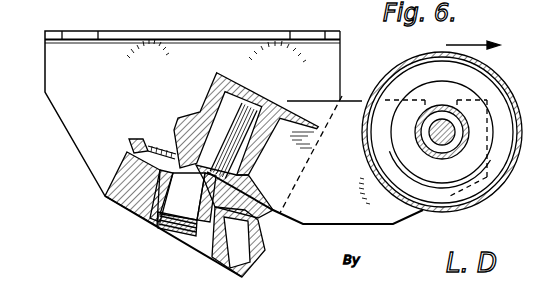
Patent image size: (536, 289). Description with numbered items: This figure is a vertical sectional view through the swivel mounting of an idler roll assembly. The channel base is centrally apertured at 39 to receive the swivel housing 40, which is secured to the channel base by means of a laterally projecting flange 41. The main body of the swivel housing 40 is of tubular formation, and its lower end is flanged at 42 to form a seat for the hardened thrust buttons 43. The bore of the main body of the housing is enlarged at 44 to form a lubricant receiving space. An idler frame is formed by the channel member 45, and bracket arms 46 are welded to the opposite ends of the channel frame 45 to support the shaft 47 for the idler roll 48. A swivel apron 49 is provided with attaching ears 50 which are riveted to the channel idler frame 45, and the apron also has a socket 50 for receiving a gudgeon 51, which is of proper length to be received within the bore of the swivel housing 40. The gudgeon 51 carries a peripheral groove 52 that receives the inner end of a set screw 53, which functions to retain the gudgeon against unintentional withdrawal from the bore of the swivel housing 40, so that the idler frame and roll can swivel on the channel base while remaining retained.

The central aperture 39 is at (138, 160).
The swivel housing 40 is at (212, 252).
The laterally projecting flange 41 is at (259, 221).
The flange 42 is at (155, 226).
The hardened thrust buttons 43 is at (178, 238).
The enlarged bore 44 is at (156, 153).
The channel member 45 is at (256, 171).
The bracket arms 46 is at (349, 117).
The shaft 47 is at (444, 134).
The idler roll 48 is at (492, 75).
The swivel apron 49 is at (207, 96).
The attaching ears 50 is at (196, 118).
The gudgeon 51 is at (252, 108).
The peripheral groove 52 is at (222, 182).
The set screw 53 is at (160, 146).